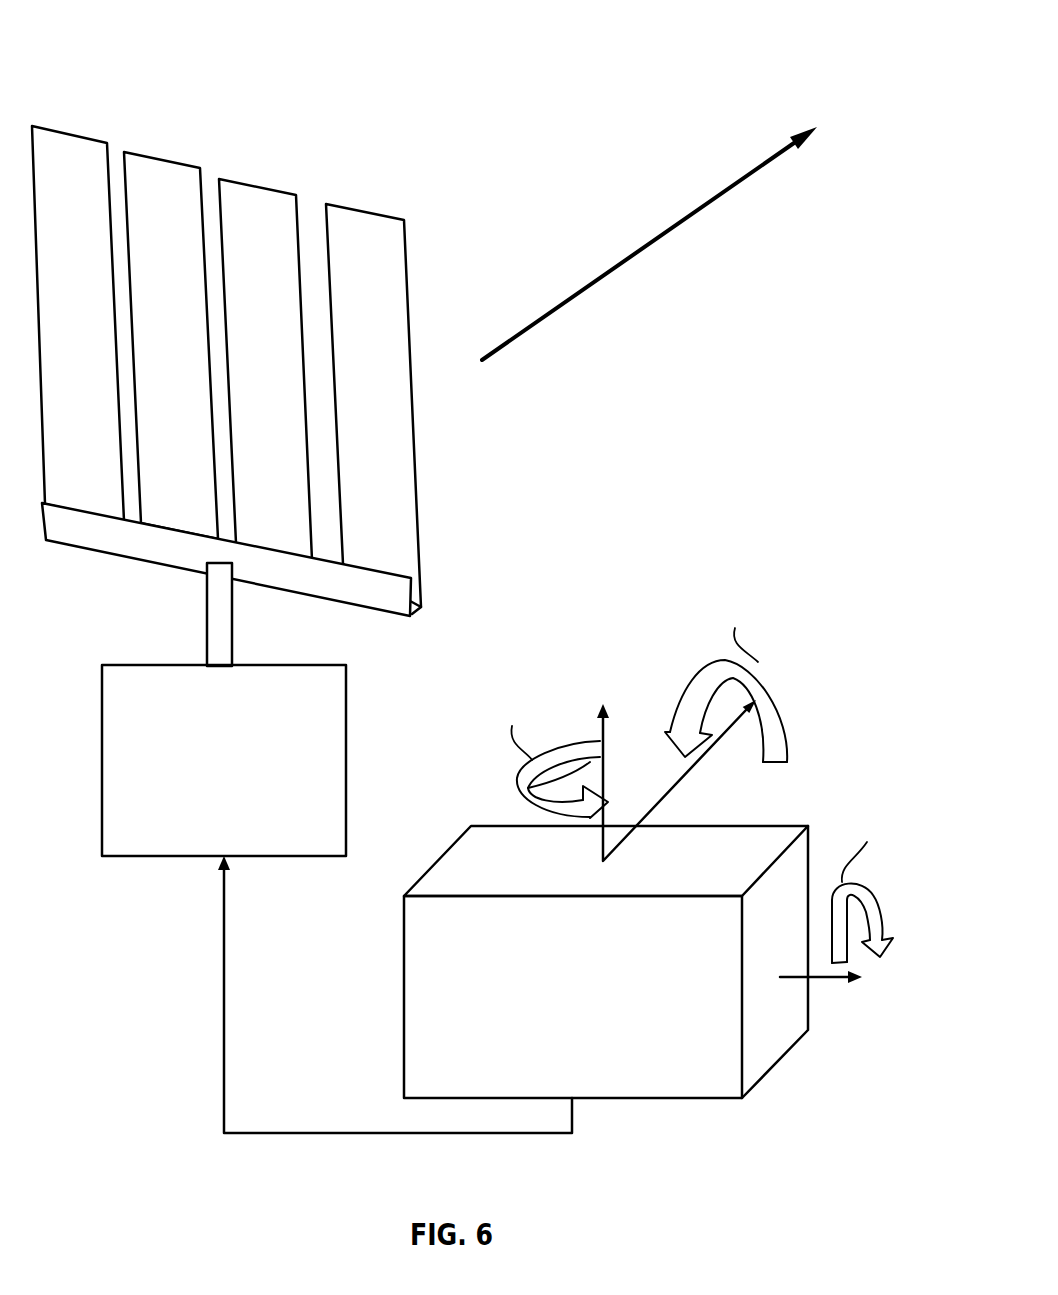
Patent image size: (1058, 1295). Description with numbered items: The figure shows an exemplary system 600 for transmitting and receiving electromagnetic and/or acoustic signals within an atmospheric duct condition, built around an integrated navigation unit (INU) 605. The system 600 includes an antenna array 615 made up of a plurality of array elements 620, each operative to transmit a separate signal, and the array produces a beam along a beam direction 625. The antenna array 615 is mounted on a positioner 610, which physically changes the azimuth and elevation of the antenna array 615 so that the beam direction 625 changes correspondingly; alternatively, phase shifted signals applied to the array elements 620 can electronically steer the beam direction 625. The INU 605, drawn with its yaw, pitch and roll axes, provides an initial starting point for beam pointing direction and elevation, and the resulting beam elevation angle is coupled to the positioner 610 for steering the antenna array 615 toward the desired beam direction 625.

The system 600 is at (600, 49).
The integrated navigation unit (INU) 605 is at (594, 1031).
The positioner 610 is at (247, 794).
The antenna array 615 is at (352, 336).
The array elements 620 is at (226, 307).
The beam direction 625 is at (586, 286).